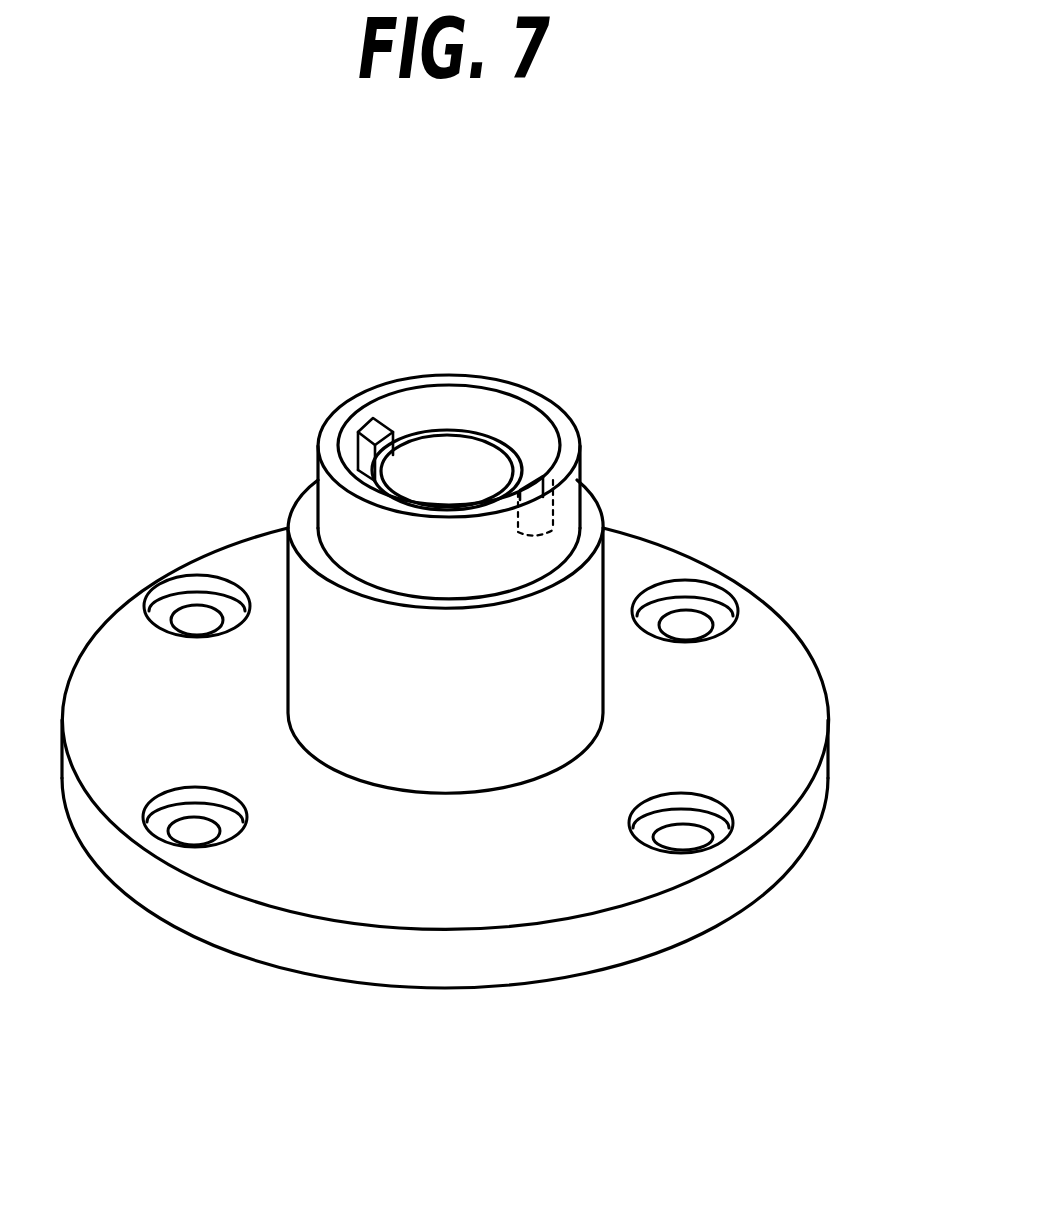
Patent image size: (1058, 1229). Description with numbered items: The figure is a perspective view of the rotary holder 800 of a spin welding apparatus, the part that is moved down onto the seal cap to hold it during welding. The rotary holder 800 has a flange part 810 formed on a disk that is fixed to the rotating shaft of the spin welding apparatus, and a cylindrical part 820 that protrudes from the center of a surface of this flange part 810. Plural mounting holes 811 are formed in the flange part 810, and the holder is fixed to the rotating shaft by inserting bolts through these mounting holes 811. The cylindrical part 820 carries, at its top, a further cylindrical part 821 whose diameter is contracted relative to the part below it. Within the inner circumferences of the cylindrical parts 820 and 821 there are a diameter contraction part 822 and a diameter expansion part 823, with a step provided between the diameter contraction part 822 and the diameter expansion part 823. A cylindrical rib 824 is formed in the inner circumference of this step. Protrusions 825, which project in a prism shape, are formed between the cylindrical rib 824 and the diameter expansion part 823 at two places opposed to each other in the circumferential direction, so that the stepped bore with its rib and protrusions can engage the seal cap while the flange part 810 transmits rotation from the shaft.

The rotary holder 800 is at (690, 393).
The flange part 810 is at (549, 957).
The mounting holes 811 is at (198, 617).
The cylindrical part 820 is at (588, 695).
The cylindrical part 821 is at (350, 537).
The diameter contraction part 822 is at (457, 460).
The diameter expansion part 823 is at (439, 402).
The cylindrical rib 824 is at (507, 447).
The protrusions 825 is at (373, 418).